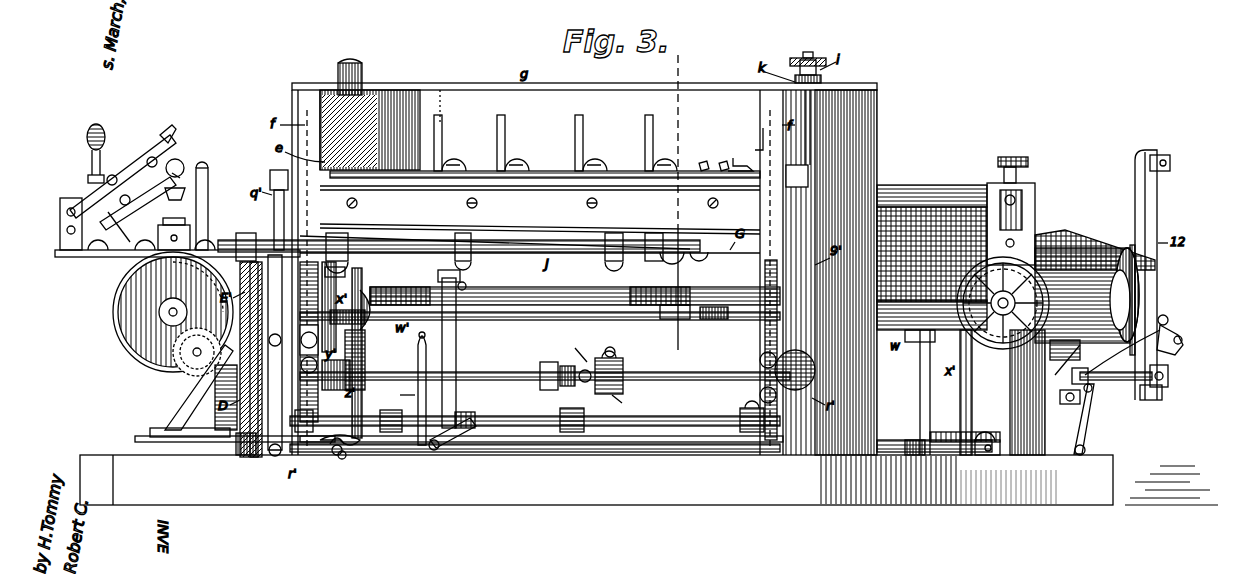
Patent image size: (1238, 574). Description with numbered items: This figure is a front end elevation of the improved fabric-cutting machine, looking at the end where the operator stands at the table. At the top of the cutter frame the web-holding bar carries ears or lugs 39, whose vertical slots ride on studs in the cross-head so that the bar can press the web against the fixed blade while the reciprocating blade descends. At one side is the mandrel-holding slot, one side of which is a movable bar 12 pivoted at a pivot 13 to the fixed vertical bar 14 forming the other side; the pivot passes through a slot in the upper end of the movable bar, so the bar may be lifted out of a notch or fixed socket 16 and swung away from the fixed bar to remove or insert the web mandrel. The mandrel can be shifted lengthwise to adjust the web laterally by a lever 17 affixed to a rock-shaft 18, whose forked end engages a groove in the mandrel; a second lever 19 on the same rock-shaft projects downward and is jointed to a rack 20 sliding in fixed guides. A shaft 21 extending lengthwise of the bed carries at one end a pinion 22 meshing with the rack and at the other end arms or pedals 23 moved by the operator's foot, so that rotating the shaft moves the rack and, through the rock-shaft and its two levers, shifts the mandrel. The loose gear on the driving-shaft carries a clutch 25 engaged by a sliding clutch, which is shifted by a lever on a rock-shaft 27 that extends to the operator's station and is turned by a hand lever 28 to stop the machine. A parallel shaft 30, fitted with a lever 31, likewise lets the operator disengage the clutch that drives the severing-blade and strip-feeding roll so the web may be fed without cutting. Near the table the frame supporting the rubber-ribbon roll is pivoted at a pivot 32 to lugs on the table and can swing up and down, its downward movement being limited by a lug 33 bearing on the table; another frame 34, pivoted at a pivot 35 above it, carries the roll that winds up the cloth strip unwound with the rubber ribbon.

The movable bar 12 is at (676, 194).
The pivot 13 is at (1170, 163).
The fixed vertical bar 14 is at (1140, 216).
The notch or fixed socket 16 is at (1166, 316).
The lever 17 is at (1170, 372).
The rock-shaft 18 is at (1135, 383).
The lever 19 is at (1095, 420).
The rack 20 is at (965, 434).
The shaft 21 is at (342, 460).
The pinion 22 is at (990, 440).
The arms or pedals 23 is at (330, 458).
The clutch 25 is at (925, 368).
The rock-shaft 27 is at (580, 452).
The lever 28 is at (403, 394).
The shaft 30 is at (272, 458).
The lever 31 is at (235, 445).
The pivot 32 is at (67, 230).
The lug 33 is at (135, 208).
The frame 34 is at (140, 165).
The pivot 35 is at (67, 208).
The ears or lugs 39 is at (742, 158).